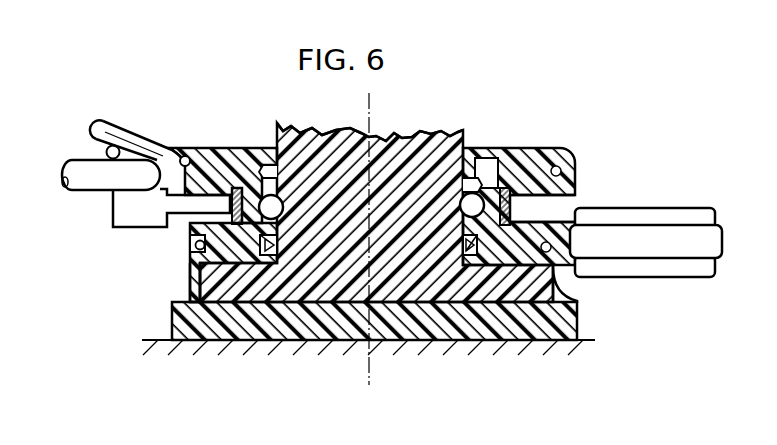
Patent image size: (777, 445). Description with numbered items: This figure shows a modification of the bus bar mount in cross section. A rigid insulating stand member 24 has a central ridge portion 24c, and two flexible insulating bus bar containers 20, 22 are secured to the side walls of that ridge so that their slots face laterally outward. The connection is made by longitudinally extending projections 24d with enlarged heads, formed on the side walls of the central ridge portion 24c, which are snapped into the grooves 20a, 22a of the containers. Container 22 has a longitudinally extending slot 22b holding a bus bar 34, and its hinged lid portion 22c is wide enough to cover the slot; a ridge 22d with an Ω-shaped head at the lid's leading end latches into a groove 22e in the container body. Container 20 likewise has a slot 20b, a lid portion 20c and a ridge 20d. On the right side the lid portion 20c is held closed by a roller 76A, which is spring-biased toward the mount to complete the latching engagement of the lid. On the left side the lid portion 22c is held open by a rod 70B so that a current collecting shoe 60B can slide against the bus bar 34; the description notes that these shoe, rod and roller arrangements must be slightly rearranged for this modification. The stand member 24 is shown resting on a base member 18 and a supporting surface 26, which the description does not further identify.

The base plate 18 is at (425, 343).
The bus bar container 20 is at (552, 148).
The longitudinally extending groove 20a is at (468, 253).
The longitudinally extending slot 20b is at (548, 203).
The lid portion 20c is at (572, 203).
The longitudinally extending ridge 20d is at (575, 296).
The bus bar container 22 is at (214, 148).
The longitudinally extending groove 22a is at (262, 243).
The longitudinally extending slot 22b is at (196, 224).
The lid portion 22c is at (141, 142).
The longitudinally extending ridge 22d is at (100, 127).
The longitudinally extending groove 22e is at (190, 270).
The stand member 24 is at (197, 287).
The central ridge portion 24c is at (422, 128).
The longitudinally extending projection 24d is at (262, 163).
The mounting surface 26 is at (555, 330).
The bus bar 34 is at (233, 188).
The bracket 60B is at (132, 222).
The pin 70B is at (90, 184).
The roller 76A is at (662, 237).